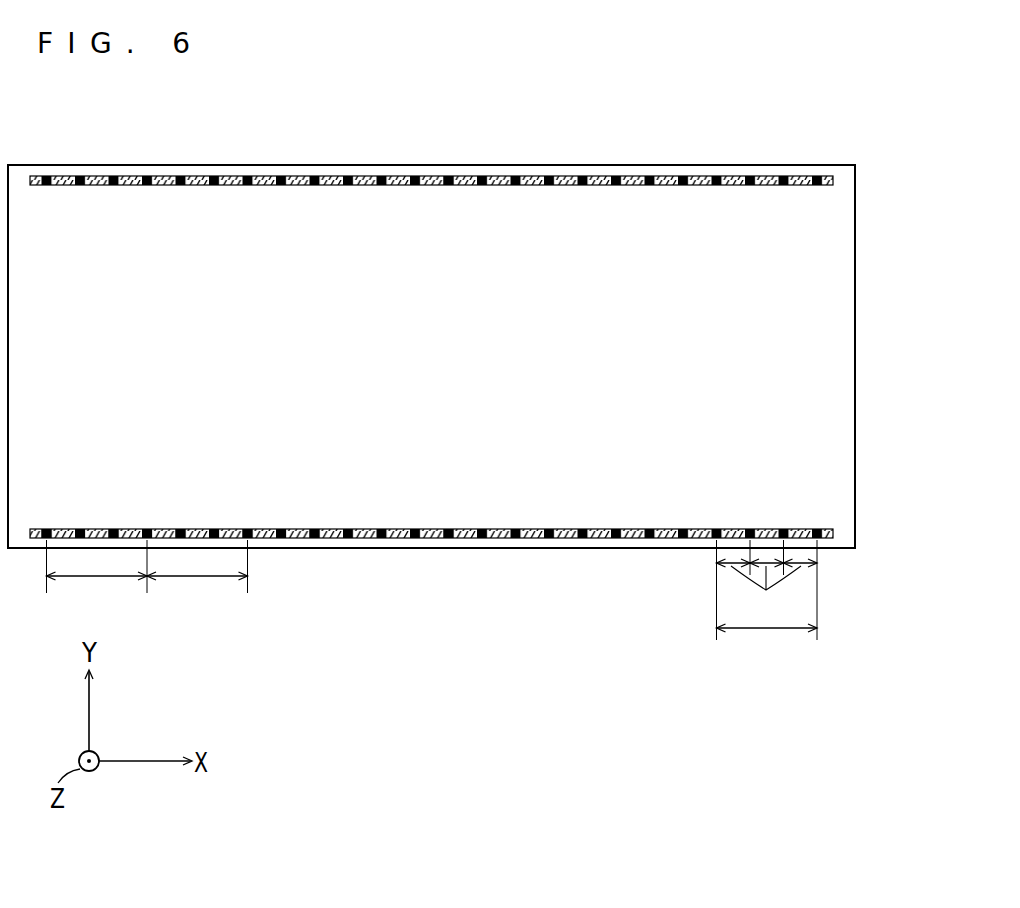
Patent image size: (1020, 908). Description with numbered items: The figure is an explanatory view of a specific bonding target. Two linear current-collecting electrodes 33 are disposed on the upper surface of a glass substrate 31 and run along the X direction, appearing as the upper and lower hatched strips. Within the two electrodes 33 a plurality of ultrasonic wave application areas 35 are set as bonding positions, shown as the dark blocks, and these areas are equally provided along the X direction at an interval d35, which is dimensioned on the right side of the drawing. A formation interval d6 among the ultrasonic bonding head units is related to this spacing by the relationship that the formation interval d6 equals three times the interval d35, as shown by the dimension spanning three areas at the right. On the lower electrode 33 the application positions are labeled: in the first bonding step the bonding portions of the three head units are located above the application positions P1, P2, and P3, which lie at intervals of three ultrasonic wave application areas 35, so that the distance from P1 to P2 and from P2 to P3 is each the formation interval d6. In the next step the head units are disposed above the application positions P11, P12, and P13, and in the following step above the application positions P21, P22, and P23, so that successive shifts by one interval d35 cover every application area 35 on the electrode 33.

The glass substrate 31 is at (855, 357).
The electrode 33 is at (834, 181).
The ultrasonic wave application area 35 is at (449, 176).
The application position P1 is at (46, 528).
The application position P2 is at (147, 528).
The application position P3 is at (248, 528).
The application position P11 is at (80, 528).
The application position P12 is at (180, 528).
The application position P13 is at (281, 528).
The application position P21 is at (114, 528).
The application position P22 is at (214, 528).
The application position P23 is at (314, 528).
The formation interval d6 is at (432, 599).
The interval d35 is at (767, 583).